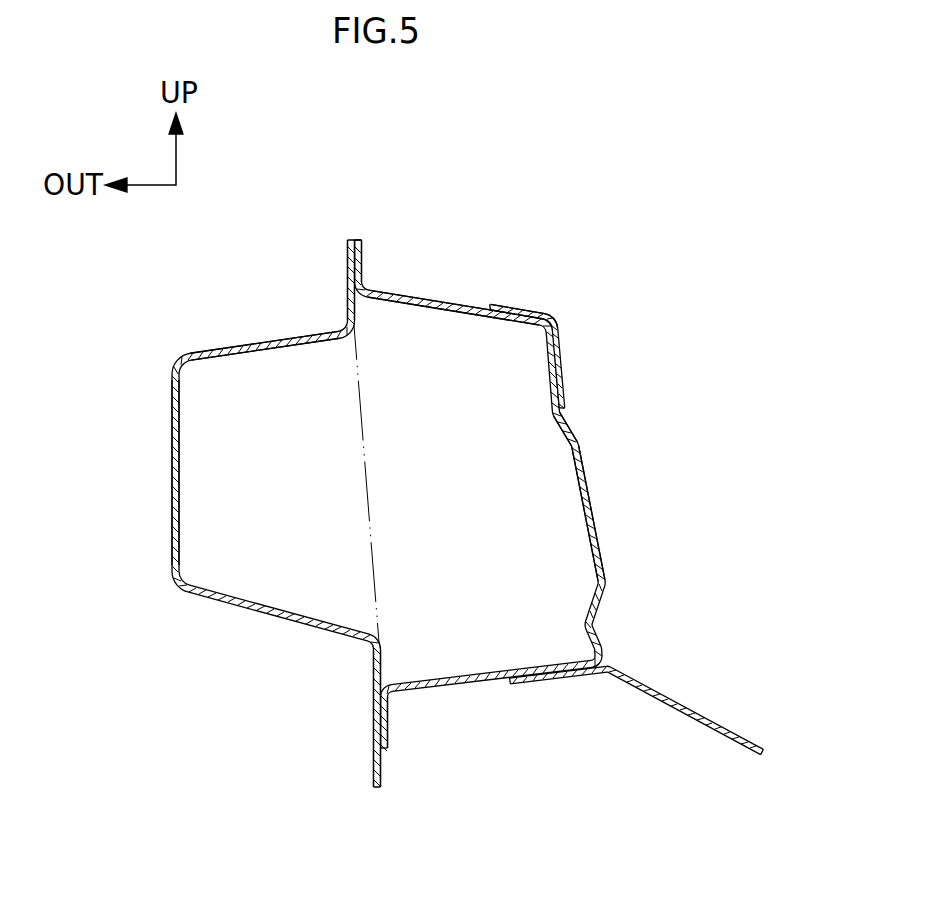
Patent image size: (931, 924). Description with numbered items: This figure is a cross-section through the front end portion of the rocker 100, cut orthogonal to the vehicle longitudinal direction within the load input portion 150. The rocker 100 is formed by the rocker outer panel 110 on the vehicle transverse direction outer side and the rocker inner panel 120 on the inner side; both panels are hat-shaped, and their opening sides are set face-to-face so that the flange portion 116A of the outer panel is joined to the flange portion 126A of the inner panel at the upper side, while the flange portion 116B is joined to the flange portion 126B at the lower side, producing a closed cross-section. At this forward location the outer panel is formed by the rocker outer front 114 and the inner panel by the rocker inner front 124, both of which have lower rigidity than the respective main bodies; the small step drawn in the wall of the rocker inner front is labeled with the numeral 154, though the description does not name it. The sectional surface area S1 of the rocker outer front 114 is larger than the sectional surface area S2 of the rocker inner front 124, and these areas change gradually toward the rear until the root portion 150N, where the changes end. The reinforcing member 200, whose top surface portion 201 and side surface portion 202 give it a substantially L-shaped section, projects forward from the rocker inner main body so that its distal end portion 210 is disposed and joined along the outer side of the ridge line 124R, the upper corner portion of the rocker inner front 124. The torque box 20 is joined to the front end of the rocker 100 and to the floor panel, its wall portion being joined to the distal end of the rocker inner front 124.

The torque box 20 is at (693, 703).
The rocker 100 is at (622, 222).
The rocker outer panel 110 is at (170, 367).
The rocker outer front 114 is at (170, 450).
The flange portion 116A is at (345, 270).
The flange portion 116B is at (372, 725).
The rocker inner panel 120 is at (583, 455).
The rocker inner front 124 is at (590, 495).
The ridge line (upper corner portion) 124R is at (552, 317).
The flange portion 126A is at (362, 253).
The flange portion 126B is at (390, 728).
The load input portion 150 is at (642, 295).
The root portion 150N is at (212, 338).
The bead 154 is at (567, 433).
The reinforcing member 200 is at (565, 363).
The top surface portion 201 is at (520, 305).
The side surface portion 202 is at (560, 337).
The distal end portion 210 is at (552, 318).
The sectional surface area S1 is at (260, 557).
The sectional surface area S2 is at (527, 617).